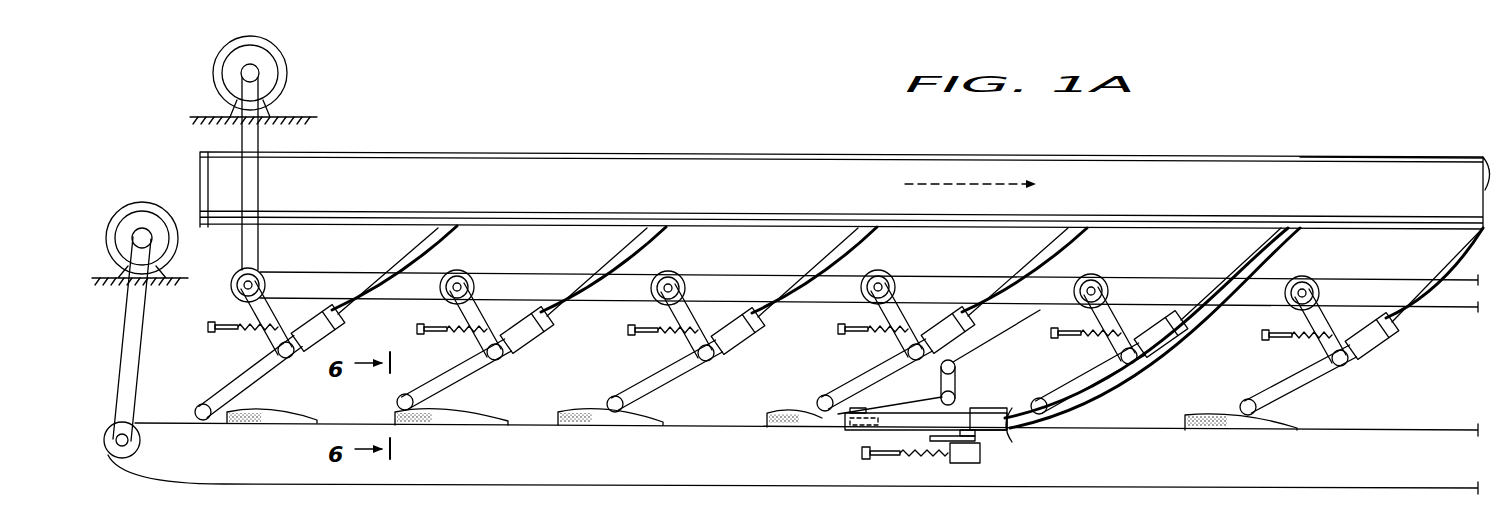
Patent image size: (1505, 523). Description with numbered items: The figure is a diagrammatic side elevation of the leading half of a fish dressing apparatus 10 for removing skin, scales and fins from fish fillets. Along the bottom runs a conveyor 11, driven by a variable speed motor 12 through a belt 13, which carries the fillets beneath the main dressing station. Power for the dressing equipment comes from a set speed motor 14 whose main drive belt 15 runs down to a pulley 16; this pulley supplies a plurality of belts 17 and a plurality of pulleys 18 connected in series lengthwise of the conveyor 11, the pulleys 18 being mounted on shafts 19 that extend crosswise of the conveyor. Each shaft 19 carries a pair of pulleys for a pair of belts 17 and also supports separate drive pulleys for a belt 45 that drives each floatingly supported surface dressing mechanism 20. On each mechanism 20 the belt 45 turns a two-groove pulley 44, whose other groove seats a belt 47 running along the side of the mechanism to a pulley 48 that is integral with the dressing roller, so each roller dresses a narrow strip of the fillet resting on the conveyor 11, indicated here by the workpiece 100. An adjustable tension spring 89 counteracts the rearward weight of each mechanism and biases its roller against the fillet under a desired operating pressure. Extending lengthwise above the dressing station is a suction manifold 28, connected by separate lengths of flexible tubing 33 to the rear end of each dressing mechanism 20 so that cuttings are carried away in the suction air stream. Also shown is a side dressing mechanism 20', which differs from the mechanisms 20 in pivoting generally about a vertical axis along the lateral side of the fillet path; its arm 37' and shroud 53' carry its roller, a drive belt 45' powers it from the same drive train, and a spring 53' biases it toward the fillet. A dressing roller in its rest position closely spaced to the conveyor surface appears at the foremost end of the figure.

The fish dressing apparatus 10 is at (572, 149).
The conveyor 11 is at (1456, 426).
The variable speed motor 12 is at (150, 193).
The belt 13 is at (120, 350).
The set speed motor 14 is at (287, 73).
The main drive belt 15 is at (259, 252).
The pulley 16 is at (266, 287).
The belts 17 is at (359, 271).
The pulleys 18 is at (234, 299).
The shafts 19 is at (242, 282).
The surface dressing mechanisms 20 is at (781, 380).
The suction manifold 28 is at (1344, 157).
The flexible tubing 33 is at (437, 242).
The pulley 44 is at (504, 361).
The belt 45 is at (800, 324).
The belt 47 is at (260, 373).
The pulley 48 is at (190, 407).
The tension spring 89 is at (272, 323).
The workpiece 100 is at (268, 432).
The drive belt 45' is at (990, 357).
The slide bar 37' is at (926, 399).
The spring 53' is at (896, 452).
The dressing mechanisms 20' is at (1045, 440).